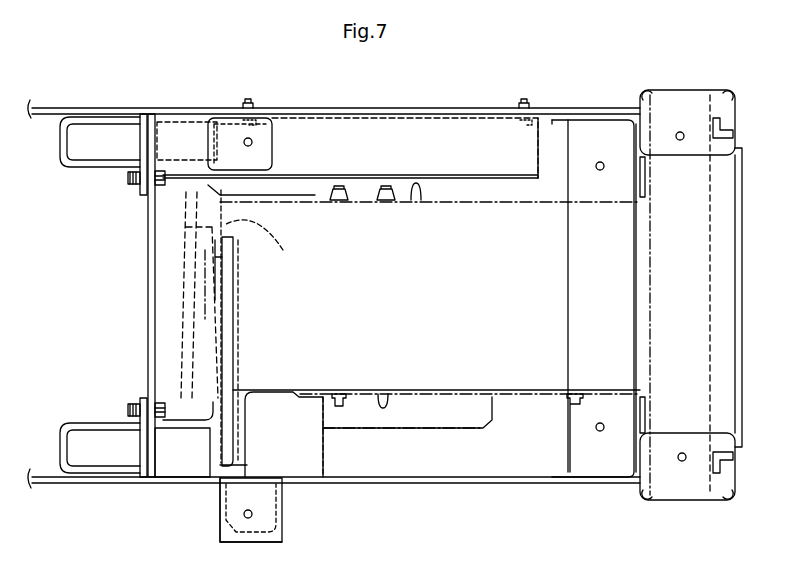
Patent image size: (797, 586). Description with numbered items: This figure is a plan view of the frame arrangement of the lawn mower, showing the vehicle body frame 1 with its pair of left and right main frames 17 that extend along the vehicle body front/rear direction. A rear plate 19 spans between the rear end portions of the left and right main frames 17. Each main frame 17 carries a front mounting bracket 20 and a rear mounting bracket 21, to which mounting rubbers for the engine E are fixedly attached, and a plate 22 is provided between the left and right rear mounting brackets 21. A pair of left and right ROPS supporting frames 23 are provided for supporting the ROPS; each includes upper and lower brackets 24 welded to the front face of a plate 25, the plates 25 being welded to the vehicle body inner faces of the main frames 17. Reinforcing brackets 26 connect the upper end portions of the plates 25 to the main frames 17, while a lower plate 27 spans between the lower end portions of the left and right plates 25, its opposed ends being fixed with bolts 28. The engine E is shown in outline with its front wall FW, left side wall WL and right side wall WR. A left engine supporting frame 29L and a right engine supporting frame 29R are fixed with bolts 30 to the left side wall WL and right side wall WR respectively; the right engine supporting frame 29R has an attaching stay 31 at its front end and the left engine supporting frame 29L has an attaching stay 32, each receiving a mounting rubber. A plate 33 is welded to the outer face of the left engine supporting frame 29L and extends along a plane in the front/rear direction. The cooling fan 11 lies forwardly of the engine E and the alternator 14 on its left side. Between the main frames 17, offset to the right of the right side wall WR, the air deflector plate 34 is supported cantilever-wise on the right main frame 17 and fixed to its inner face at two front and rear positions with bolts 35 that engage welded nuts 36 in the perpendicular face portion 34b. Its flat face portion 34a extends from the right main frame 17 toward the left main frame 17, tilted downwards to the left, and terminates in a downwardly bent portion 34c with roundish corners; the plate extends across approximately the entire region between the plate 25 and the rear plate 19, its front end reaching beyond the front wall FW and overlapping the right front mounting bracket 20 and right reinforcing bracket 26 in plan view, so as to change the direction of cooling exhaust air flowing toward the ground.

The vehicle body frame 1 is at (68, 486).
The cooling fan 11 is at (183, 332).
The alternator 14 is at (323, 460).
The main frame 17 is at (462, 108).
The rear plate 19 is at (580, 316).
The front mounting bracket 20 is at (262, 136).
The rear mounting bracket 21 is at (676, 108).
The plate 22 is at (738, 268).
The ROPS supporting frame 23 is at (80, 166).
The bracket 24 is at (107, 168).
The plate 25 is at (143, 135).
The reinforcing bracket 26 is at (178, 128).
The lower plate 27 is at (148, 263).
The bolt 28 is at (166, 178).
The right engine supporting frame 29R is at (314, 198).
The left engine supporting frame 29L is at (434, 398).
The bolt 30 is at (385, 186).
The attaching stay 31 is at (300, 192).
The attaching stay 32 is at (232, 536).
The plate 33 is at (470, 430).
The air deflector plate 34 is at (478, 180).
The flat face portion 34a is at (425, 140).
The perpendicular face portion 34b is at (505, 118).
The bent portion 34c is at (503, 180).
The bolt 35 is at (248, 100).
The welded nut 36 is at (255, 122).
The front wall FW is at (265, 246).
The right side wall WR is at (421, 205).
The left side wall WL is at (384, 392).
The engine E is at (499, 382).